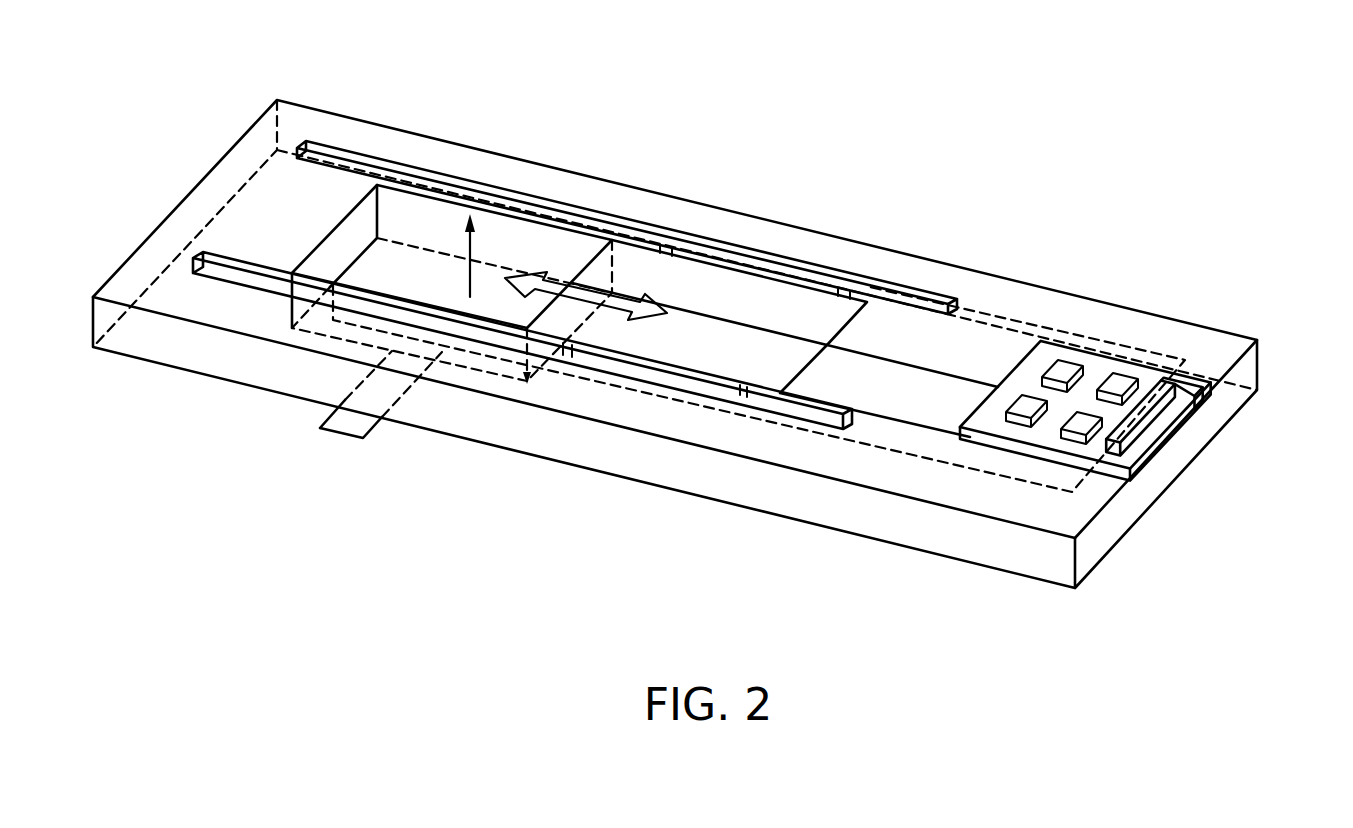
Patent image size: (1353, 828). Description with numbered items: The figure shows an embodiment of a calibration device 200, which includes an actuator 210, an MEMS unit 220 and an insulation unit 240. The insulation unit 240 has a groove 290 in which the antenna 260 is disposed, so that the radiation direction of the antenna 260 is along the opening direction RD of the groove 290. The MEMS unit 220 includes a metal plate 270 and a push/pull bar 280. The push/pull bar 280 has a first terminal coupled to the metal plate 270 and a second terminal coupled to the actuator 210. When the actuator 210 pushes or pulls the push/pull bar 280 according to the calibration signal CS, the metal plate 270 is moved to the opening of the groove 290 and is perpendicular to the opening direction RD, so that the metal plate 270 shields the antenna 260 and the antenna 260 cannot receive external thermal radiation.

The calibration device 200 is at (1121, 111).
The actuator 210 is at (1140, 468).
The MEMS unit 220 is at (1100, 340).
The insulation unit 240 is at (632, 185).
The antenna 260 is at (420, 282).
The metal plate 270 is at (715, 295).
The push/pull bar 280 is at (955, 382).
The groove 290 is at (363, 268).